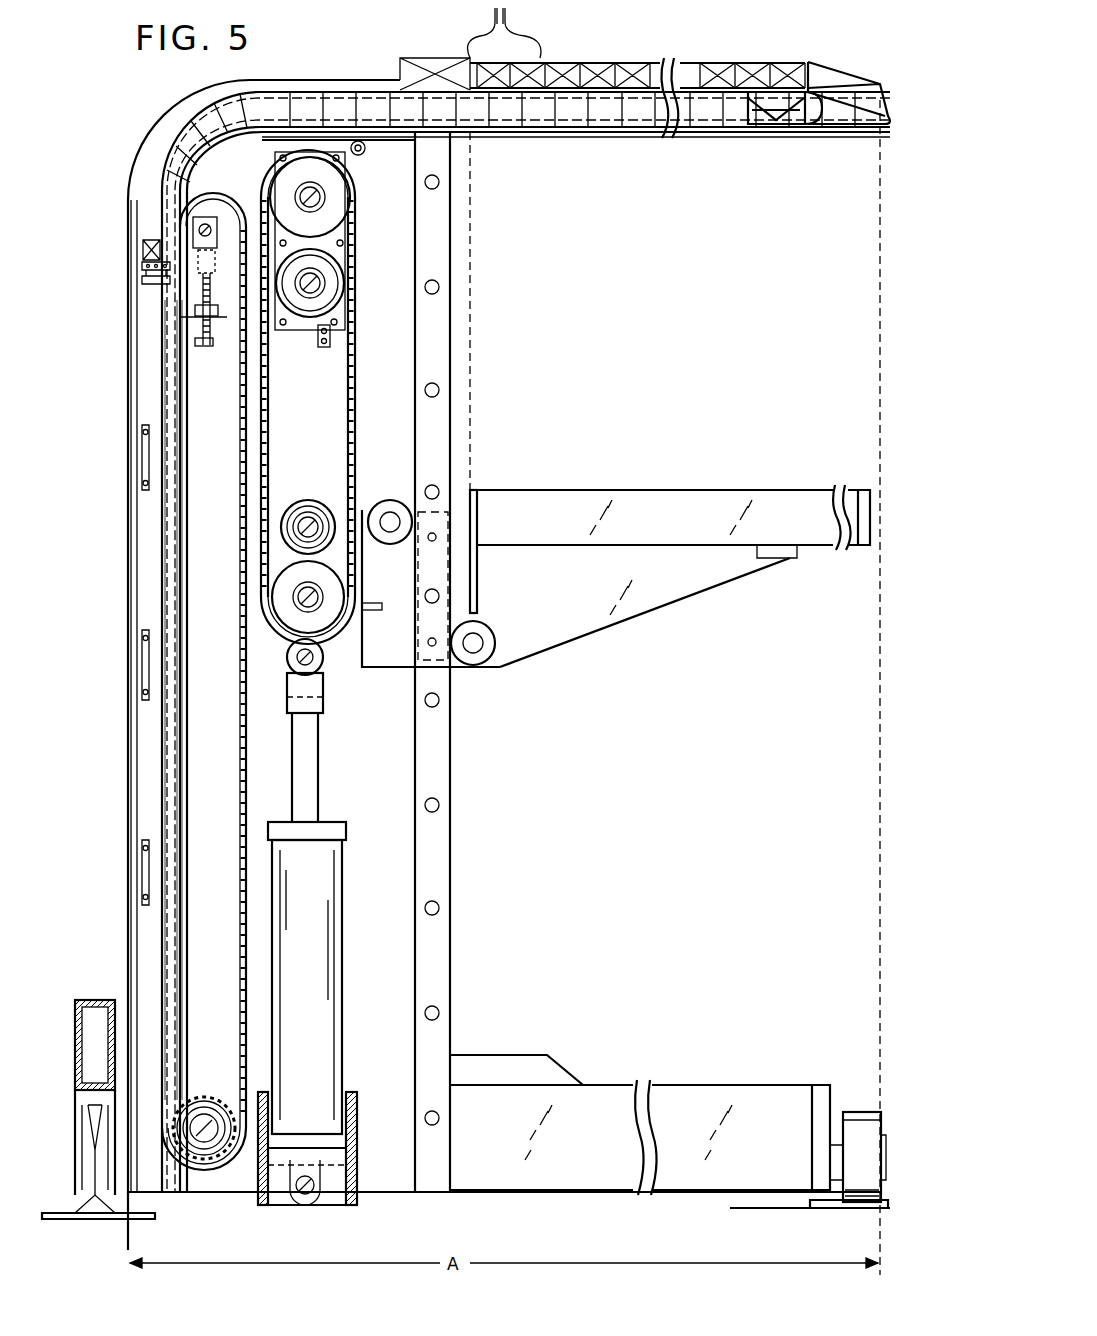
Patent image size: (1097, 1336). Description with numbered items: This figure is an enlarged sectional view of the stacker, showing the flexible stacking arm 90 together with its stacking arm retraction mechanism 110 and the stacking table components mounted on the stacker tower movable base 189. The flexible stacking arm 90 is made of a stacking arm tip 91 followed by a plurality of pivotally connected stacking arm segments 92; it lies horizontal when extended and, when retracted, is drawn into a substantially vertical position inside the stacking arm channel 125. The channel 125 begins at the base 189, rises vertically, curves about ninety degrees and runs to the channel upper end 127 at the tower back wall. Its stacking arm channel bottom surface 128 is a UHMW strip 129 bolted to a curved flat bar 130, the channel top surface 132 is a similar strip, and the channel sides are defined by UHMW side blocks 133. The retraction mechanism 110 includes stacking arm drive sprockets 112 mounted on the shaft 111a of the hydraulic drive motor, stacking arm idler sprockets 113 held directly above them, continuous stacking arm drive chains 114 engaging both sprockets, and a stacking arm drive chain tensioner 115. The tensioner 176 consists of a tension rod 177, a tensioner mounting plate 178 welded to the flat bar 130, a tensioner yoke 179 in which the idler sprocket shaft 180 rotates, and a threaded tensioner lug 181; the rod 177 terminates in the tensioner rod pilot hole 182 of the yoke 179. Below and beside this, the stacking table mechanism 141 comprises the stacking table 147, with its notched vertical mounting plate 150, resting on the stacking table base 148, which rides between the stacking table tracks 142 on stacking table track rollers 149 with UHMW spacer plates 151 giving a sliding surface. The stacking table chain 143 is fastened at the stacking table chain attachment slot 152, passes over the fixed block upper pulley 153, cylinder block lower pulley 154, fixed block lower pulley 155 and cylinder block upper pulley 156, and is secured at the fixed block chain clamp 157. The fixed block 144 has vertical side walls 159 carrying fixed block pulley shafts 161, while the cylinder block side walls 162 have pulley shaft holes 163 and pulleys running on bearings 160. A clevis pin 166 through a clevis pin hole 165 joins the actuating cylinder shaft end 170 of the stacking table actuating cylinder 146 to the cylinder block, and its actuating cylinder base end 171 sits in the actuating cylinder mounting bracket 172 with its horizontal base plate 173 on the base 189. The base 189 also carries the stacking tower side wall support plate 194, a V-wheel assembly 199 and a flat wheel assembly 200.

The flexible stacking arm 90 is at (812, 128).
The stacking arm tip 91 is at (848, 128).
The stacking arm segments 92 is at (775, 125).
The stacking arm retraction mechanism 110 is at (160, 403).
The shaft 111a is at (206, 1140).
The stacking arm drive sprockets 112 is at (212, 1095).
The stacking arm idler sprockets 113 is at (240, 182).
The stacking arm drive chains 114 is at (148, 348).
The stacking arm drive chain tensioner 115 is at (165, 280).
The stacking arm channel 125 is at (150, 378).
The channel upper end 127 is at (455, 130).
The stacking arm channel bottom surface 128 is at (185, 108).
The UHMW strip 129 is at (160, 130).
The flat bar 130 is at (452, 140).
The channel top surface 132 is at (435, 74).
The UHMW side blocks 133 is at (142, 868).
The stacking table mechanism 141 is at (712, 602).
The stacking table track 142 is at (452, 812).
The stacking table chain 143 is at (358, 360).
The fixed block 144 is at (360, 207).
The stacking table actuating cylinder 146 is at (350, 850).
The stacking table 147 is at (748, 492).
The stacking table base 148 is at (645, 600).
The stacking table track rollers 149 is at (392, 512).
The vertical mounting plate 150 is at (478, 572).
The UHMW polymeric spacer plates 151 is at (415, 575).
The stacking table chain attachment slot 152 is at (378, 612).
The fixed block upper pulley 153 is at (355, 190).
The cylinder block lower pulley 154 is at (300, 622).
The fixed block lower pulley 155 is at (345, 270).
The cylinder block upper pulley 156 is at (290, 520).
The fixed block chain clamp 157 is at (325, 348).
The vertical side walls 159 is at (350, 247).
The bearings 160 is at (318, 205).
The fixed block pulley shafts 161 is at (315, 195).
The cylinder block side walls 162 is at (304, 513).
The pulley shaft holes 163 is at (292, 592).
The clevis pin hole 165 is at (312, 665).
The clevis pin 166 is at (320, 700).
The actuating cylinder shaft end 170 is at (290, 690).
The actuating cylinder base end 171 is at (330, 1148).
The actuating cylinder mounting bracket 172 is at (358, 1160).
The horizontal base plate 173 is at (335, 1205).
The stacking arm drive chain tensioner 176 is at (195, 300).
The tension rod 177 is at (225, 300).
The tensioner mounting plate 178 is at (222, 345).
The tensioner yoke 179 is at (200, 232).
The idler sprocket shaft 180 is at (215, 240).
The threaded tensioner lug 181 is at (225, 320).
The tensioner rod pilot hole 182 is at (200, 260).
The stacker tower movable base 189 is at (702, 1090).
The stacking tower side wall support plate 194 is at (508, 1055).
The V-wheel assembly 199 is at (80, 1120).
The flat wheel assembly 200 is at (860, 1112).